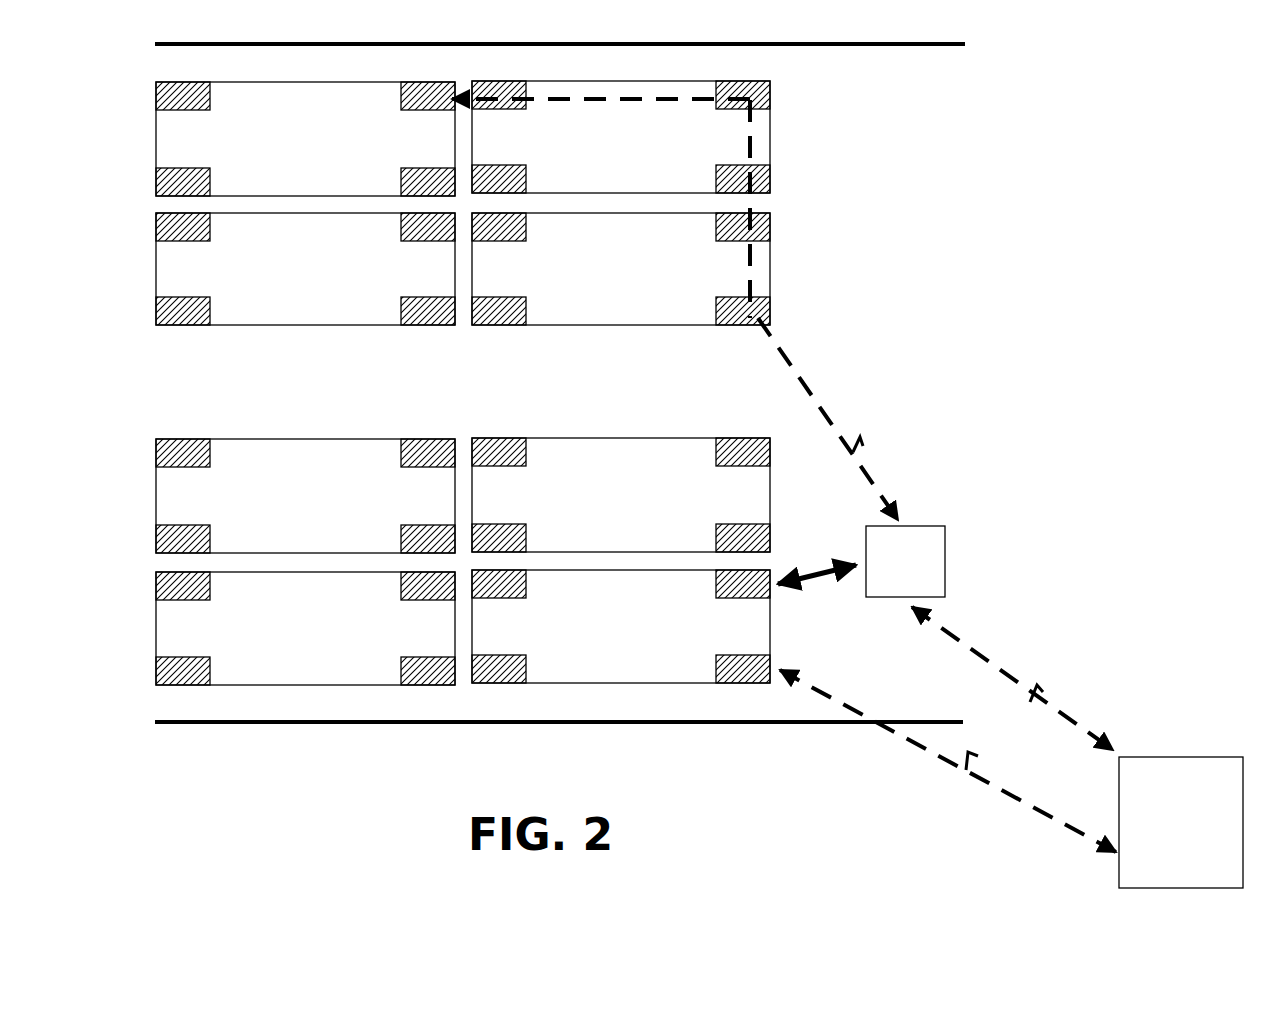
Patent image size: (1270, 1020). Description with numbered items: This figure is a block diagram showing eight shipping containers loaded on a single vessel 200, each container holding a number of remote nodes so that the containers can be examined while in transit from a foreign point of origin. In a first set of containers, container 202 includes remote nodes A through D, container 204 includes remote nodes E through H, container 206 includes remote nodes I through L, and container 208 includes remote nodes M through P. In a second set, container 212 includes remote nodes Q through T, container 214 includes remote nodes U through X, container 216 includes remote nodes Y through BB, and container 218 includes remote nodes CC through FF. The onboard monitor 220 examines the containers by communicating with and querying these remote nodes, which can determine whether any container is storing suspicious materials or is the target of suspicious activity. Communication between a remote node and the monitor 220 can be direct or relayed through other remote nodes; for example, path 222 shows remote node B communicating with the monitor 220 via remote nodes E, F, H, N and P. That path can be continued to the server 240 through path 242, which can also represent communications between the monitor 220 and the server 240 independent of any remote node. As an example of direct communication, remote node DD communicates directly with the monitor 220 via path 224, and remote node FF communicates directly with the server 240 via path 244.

The vessel 200 is at (787, 46).
The container 202 is at (305, 139).
The container 204 is at (621, 137).
The container 206 is at (305, 269).
The container 208 is at (621, 269).
The container 212 is at (305, 496).
The container 214 is at (621, 495).
The container 216 is at (305, 628).
The container 218 is at (621, 626).
The onboard monitor 220 is at (905, 561).
The path 222 is at (820, 400).
The path 224 is at (830, 566).
The server 240 is at (1181, 822).
The path 242 is at (955, 648).
The path 244 is at (910, 758).